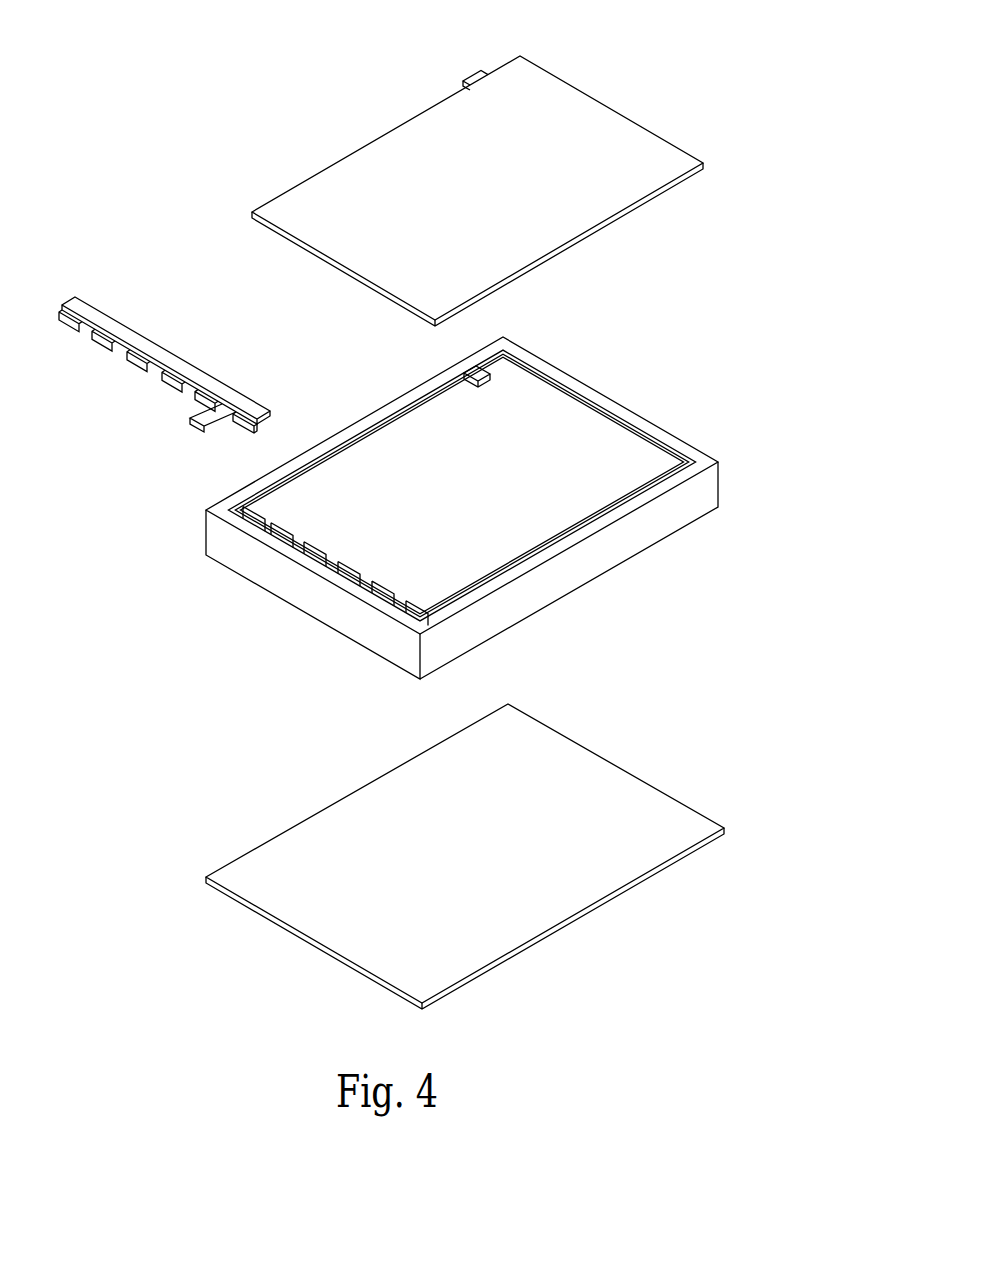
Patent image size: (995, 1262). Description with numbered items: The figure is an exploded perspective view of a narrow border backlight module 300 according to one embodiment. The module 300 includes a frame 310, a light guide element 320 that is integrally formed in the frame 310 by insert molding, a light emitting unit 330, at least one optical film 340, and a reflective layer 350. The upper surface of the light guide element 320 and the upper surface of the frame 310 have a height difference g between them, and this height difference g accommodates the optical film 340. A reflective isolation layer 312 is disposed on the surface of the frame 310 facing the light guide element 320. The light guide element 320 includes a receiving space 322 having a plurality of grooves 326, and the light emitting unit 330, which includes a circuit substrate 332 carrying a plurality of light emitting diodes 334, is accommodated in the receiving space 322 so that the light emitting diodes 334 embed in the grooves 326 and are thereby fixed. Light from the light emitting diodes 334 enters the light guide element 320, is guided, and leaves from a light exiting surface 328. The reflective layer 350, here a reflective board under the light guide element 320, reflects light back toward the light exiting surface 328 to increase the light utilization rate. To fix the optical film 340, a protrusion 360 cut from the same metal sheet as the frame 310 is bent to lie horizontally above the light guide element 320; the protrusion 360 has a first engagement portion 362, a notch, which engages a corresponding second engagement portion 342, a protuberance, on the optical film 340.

The narrow border backlight module 300 is at (237, 116).
The frame 310 is at (436, 506).
The reflective isolation layer 312 is at (685, 445).
The light guide element 320 is at (488, 477).
The receiving space 322 is at (222, 507).
The grooves 326 is at (407, 585).
The light exiting surface 328 is at (491, 484).
The light emitting unit 330 is at (164, 324).
The circuit substrate 332 is at (200, 382).
The light emitting diodes 334 is at (143, 353).
The optical film 340 is at (480, 168).
The second engagement portion 342 is at (464, 68).
The reflective layer 350 is at (544, 899).
The protrusion 360 is at (487, 402).
The first engagement portion 362 is at (470, 372).
The height difference g is at (594, 452).